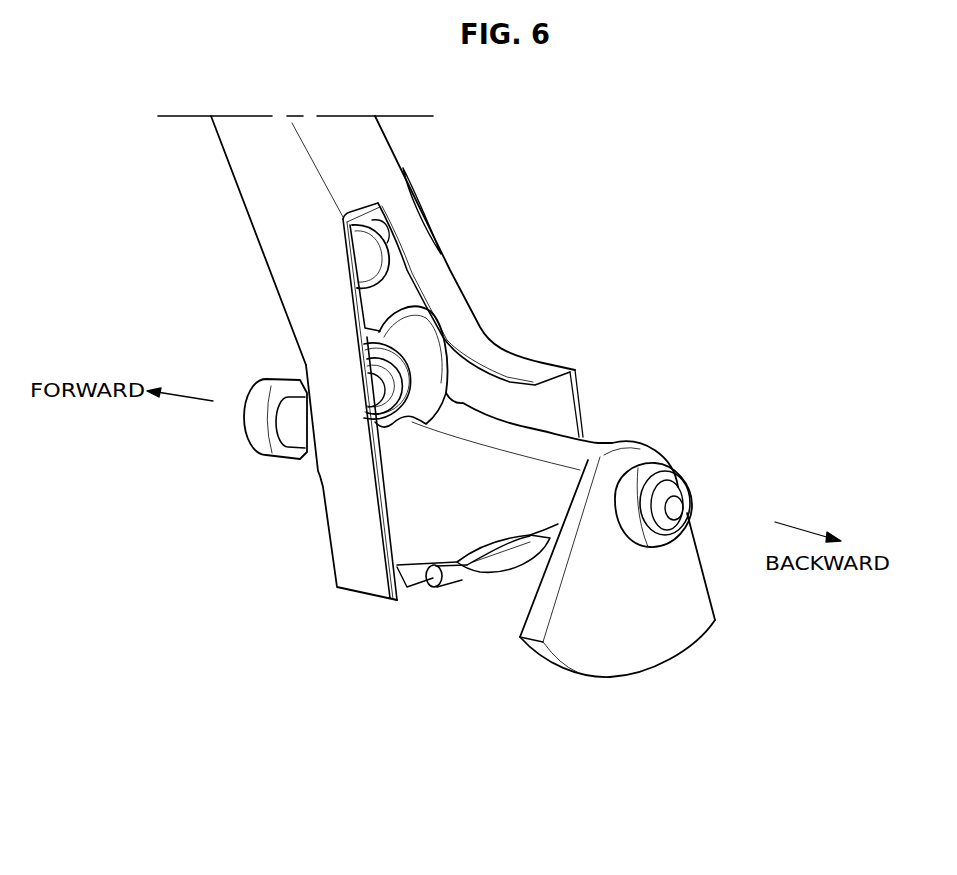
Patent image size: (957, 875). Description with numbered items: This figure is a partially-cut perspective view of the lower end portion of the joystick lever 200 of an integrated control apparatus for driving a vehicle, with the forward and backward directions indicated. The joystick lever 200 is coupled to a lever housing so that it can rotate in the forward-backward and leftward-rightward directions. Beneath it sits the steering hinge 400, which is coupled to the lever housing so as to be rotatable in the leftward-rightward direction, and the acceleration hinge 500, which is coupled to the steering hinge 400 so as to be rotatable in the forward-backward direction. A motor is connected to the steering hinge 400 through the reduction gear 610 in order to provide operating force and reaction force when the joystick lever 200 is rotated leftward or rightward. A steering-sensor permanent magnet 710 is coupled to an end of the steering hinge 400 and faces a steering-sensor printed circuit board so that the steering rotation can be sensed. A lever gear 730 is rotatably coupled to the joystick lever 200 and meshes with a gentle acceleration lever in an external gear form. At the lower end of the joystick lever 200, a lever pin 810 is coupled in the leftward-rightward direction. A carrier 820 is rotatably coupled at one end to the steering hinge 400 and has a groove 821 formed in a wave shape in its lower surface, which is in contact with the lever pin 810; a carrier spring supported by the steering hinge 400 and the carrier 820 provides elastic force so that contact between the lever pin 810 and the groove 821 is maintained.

The joystick lever 200 is at (252, 178).
The steering hinge 400 is at (553, 447).
The acceleration hinge 500 is at (392, 377).
The reduction gear 610 is at (630, 657).
The steering-sensor permanent magnet 710 is at (675, 508).
The lever gear 730 is at (363, 267).
The lever pin 810 is at (459, 575).
The carrier 820 is at (405, 570).
The groove 821 is at (422, 585).